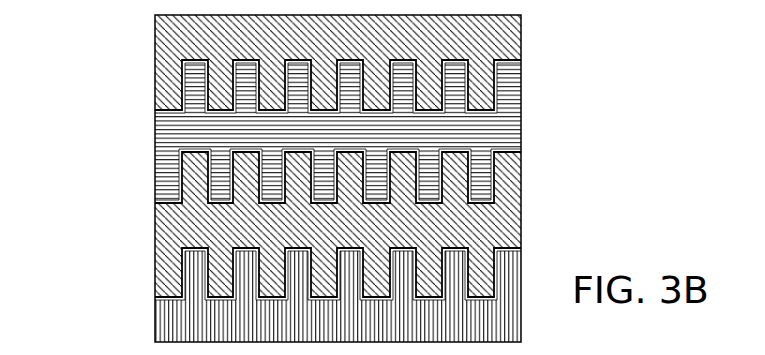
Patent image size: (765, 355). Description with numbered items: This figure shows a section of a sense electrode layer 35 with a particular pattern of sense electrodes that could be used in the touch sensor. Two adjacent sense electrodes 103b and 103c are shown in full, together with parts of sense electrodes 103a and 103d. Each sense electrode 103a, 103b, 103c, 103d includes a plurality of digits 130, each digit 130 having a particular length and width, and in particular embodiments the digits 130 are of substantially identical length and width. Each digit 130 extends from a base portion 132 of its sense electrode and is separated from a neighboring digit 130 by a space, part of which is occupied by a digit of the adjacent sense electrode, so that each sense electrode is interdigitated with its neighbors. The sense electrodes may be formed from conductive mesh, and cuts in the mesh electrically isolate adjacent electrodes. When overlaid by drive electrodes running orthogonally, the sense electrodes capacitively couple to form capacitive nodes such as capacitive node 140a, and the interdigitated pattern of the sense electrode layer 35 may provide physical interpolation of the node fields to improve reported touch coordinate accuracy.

The sense electrode layer 35 is at (352, 171).
The sense electrode 103a is at (173, 47).
The sense electrode 103b is at (175, 127).
The sense electrode 103c is at (175, 223).
The sense electrode 103d is at (168, 318).
The digit 130 is at (455, 62).
The base portion 132 is at (290, 171).
The capacitive node 140a is at (521, 59).